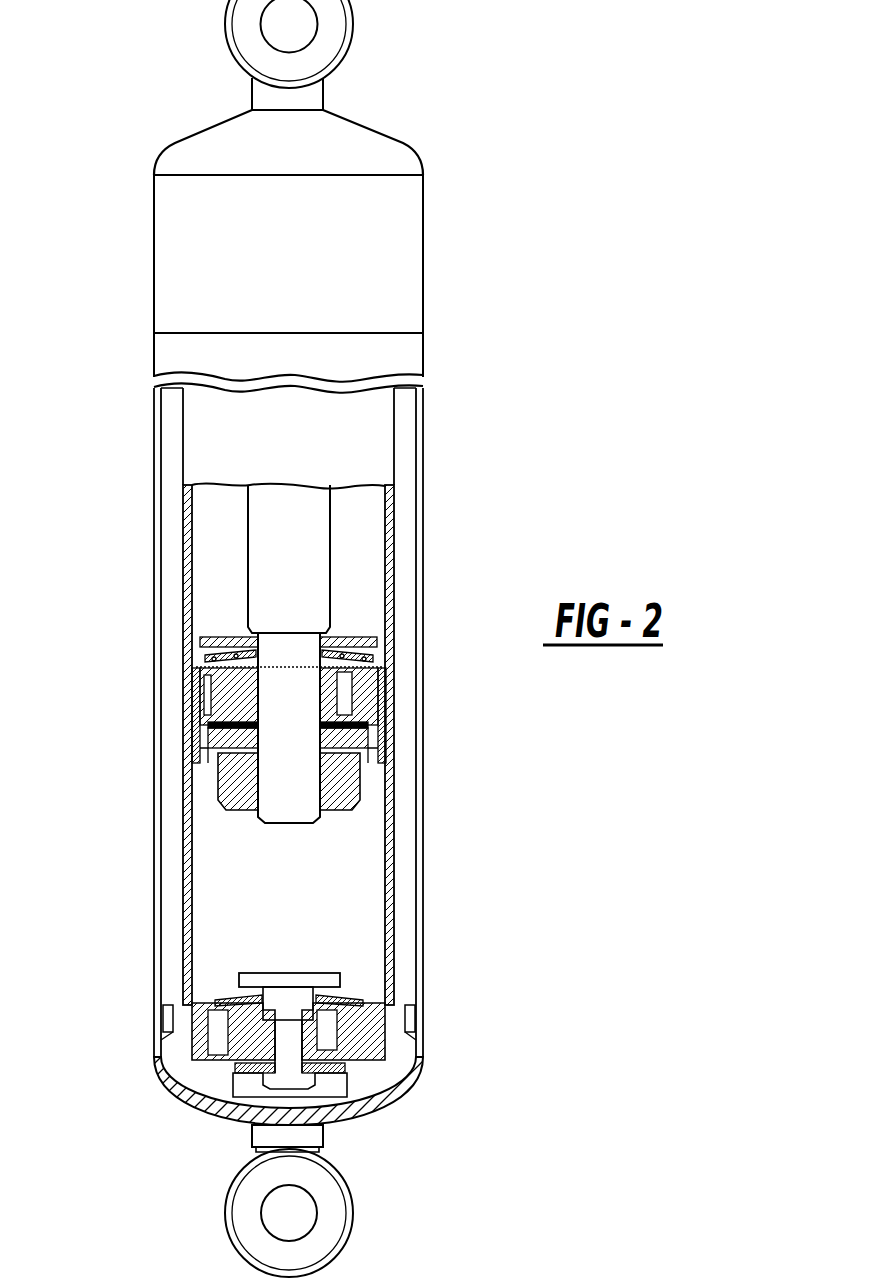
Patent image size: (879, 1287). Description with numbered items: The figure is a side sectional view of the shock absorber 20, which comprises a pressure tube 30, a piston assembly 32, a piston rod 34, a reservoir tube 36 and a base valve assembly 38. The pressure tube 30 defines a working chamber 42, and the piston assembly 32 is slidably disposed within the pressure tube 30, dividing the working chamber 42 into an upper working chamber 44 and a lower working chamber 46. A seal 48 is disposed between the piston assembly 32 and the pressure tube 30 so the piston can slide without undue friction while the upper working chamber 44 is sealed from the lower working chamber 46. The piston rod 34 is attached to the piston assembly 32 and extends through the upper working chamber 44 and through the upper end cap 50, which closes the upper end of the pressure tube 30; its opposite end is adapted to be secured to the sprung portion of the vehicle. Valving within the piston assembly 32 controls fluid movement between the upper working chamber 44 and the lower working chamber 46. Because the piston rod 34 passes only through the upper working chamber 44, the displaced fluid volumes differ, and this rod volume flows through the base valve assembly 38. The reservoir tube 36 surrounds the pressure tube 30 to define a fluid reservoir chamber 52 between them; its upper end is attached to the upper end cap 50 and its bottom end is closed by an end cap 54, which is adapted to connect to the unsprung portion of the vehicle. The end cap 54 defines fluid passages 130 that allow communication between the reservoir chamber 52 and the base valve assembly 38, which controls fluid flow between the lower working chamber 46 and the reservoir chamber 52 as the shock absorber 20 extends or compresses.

The shock absorber 20 is at (517, 78).
The pressure tube 30 is at (392, 847).
The piston assembly 32 is at (386, 695).
The piston rod 34 is at (274, 566).
The reservoir tube 36 is at (421, 928).
The base valve assembly 38 is at (368, 1035).
The working chamber 42 is at (238, 904).
The upper working chamber 44 is at (366, 549).
The lower working chamber 46 is at (274, 904).
The seal 48 is at (186, 730).
The upper end cap 50 is at (348, 141).
The fluid reservoir chamber 52 is at (167, 557).
The end cap 54 is at (386, 1085).
The fluid passages 130 is at (163, 1057).